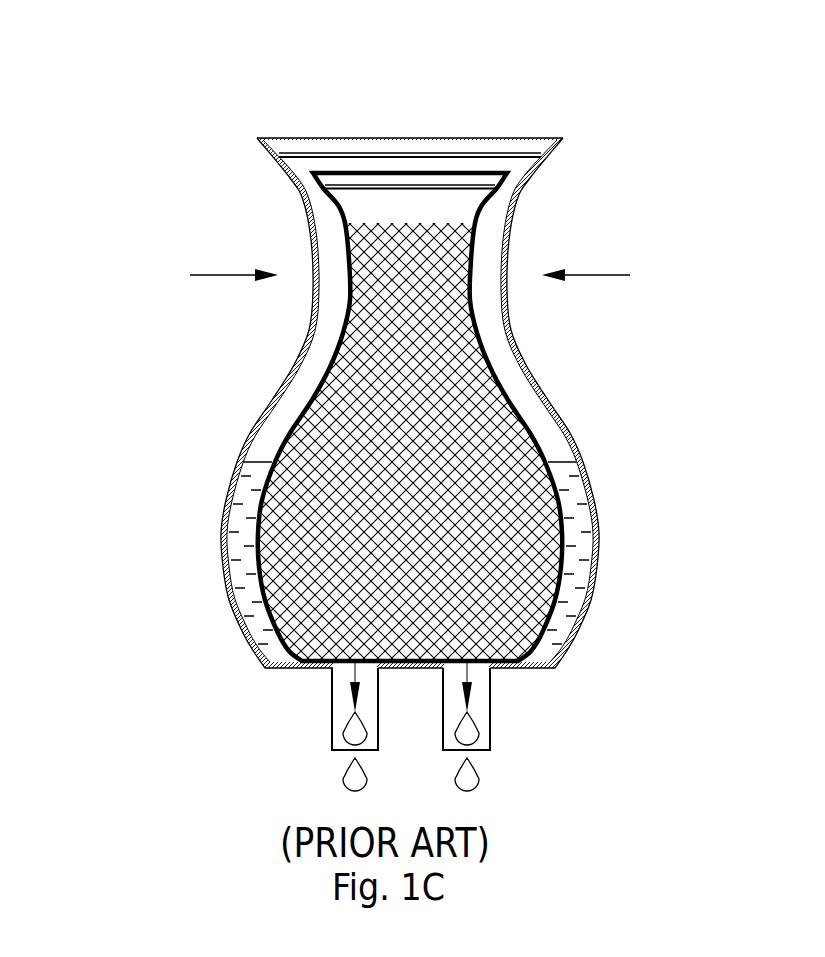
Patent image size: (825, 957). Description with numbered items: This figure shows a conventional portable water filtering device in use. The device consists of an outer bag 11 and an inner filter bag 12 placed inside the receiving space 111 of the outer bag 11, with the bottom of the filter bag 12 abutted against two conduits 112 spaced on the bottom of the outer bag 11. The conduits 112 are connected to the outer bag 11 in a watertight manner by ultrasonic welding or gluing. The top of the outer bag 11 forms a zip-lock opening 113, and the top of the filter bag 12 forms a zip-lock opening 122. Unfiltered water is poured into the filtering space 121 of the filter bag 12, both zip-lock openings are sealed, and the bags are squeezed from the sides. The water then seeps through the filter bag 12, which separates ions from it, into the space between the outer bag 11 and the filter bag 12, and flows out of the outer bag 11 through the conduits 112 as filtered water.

The outer bag 11 is at (577, 443).
The receiving space 111 is at (583, 550).
The conduits 112 is at (477, 712).
The zip-lock opening 113 is at (290, 158).
The inner filter bag 12 is at (480, 350).
The filtering space 121 is at (457, 203).
The zip-lock opening 122 is at (381, 188).